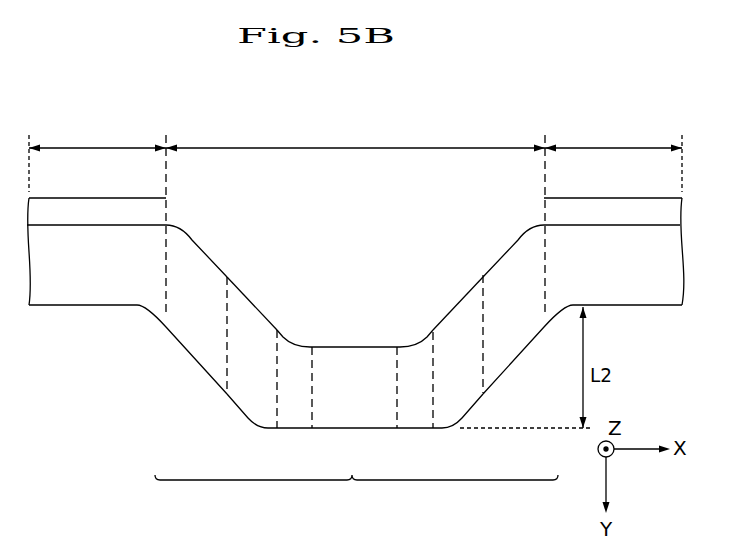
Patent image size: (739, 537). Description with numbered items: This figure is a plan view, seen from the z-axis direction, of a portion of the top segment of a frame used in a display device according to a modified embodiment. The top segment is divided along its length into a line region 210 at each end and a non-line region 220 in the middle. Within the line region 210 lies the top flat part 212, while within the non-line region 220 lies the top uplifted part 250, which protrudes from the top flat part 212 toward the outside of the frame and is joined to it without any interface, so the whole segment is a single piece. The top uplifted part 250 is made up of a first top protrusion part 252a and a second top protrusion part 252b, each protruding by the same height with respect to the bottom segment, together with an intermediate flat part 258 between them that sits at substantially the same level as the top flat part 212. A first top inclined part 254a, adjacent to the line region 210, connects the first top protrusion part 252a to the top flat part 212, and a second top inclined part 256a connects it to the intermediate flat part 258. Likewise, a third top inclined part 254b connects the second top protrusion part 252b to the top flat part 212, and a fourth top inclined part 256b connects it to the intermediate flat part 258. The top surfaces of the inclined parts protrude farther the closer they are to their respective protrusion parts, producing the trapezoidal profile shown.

The line region 210 is at (355, 158).
The non-line region 220 is at (355, 220).
The top flat part 212 is at (73, 292).
The top uplifted part 250 is at (356, 491).
The first top protrusion part 252a is at (247, 399).
The second top protrusion part 252b is at (467, 399).
The first top inclined part 254a is at (198, 340).
The third top inclined part 254b is at (513, 340).
The second top inclined part 256a is at (295, 413).
The fourth top inclined part 256b is at (412, 417).
The intermediate flat part 258 is at (358, 413).